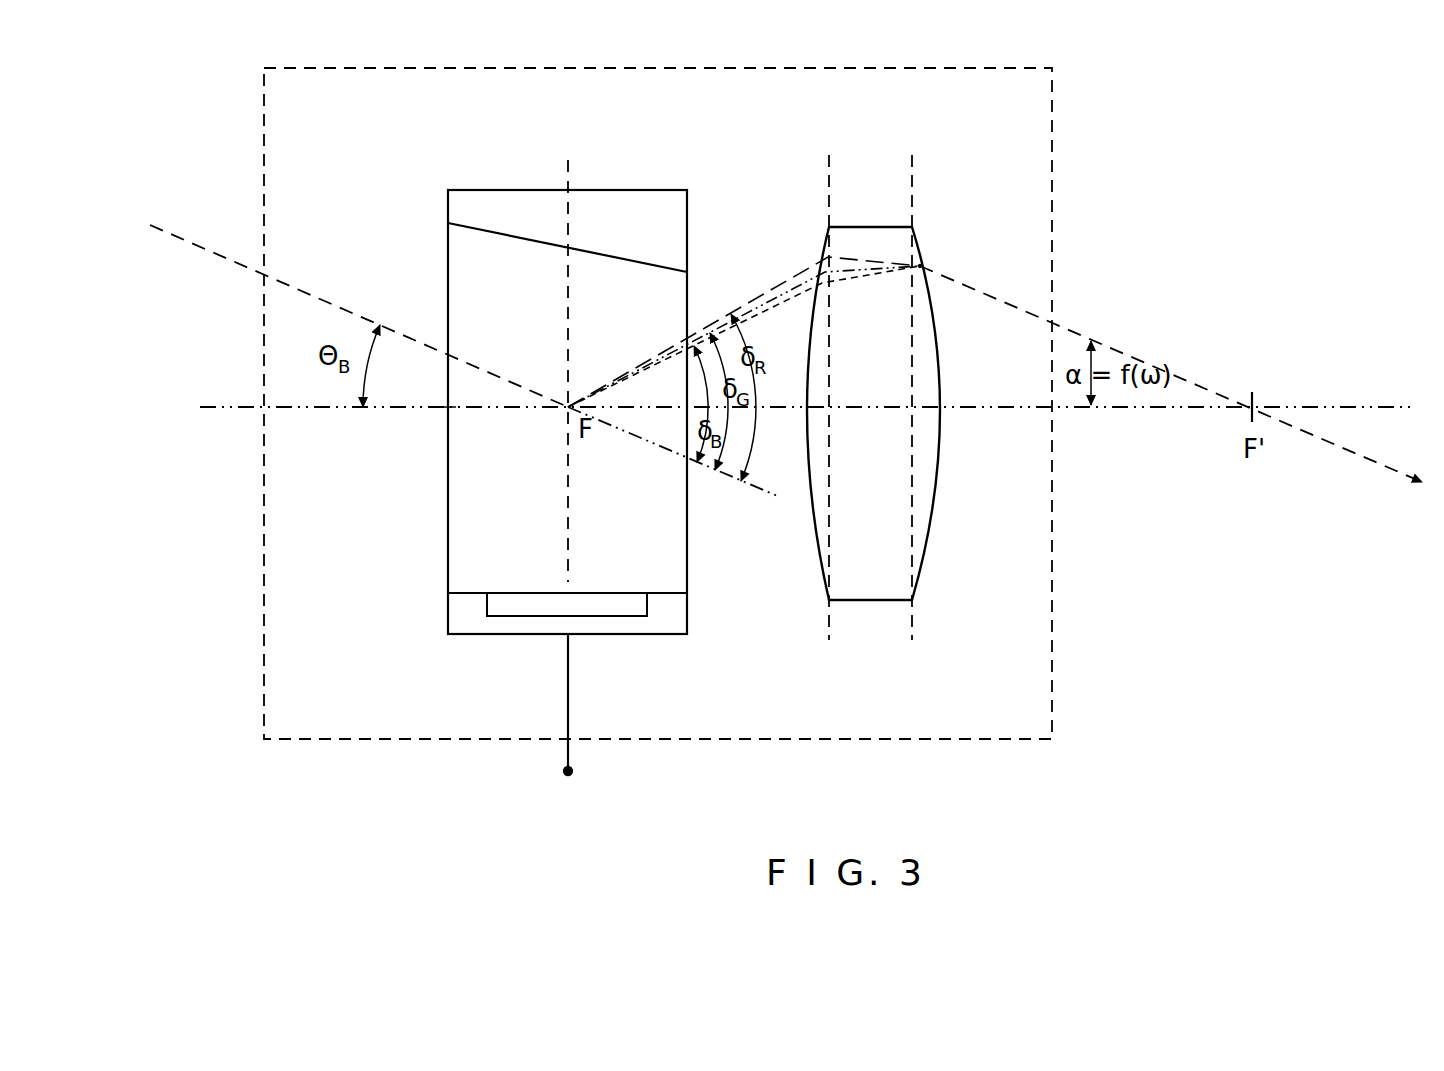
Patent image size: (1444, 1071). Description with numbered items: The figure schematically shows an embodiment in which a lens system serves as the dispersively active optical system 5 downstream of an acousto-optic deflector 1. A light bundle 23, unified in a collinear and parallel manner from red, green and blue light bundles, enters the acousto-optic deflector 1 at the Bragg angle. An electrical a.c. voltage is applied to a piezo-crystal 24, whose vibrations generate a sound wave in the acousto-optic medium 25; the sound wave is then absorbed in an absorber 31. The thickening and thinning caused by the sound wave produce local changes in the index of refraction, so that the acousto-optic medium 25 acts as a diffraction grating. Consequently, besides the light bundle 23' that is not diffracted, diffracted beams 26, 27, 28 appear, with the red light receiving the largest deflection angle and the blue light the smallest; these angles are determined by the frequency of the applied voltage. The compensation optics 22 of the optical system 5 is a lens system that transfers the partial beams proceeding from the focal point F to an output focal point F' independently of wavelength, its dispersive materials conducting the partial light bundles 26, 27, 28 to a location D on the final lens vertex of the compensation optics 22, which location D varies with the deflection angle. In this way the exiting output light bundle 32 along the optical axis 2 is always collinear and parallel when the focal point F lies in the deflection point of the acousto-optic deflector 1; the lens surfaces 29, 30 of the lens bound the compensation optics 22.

The acousto-optic deflector 1 is at (447, 408).
The optical axis 2 is at (1323, 405).
The dispersively active optical system 5 is at (900, 431).
The compensation optics 22 is at (868, 520).
The light bundle 23 is at (359, 316).
The light bundle that is not diffracted 23' is at (675, 496).
The piezo-crystal 24 is at (646, 616).
The acousto-optic medium 25 is at (455, 541).
The diffracted beam 26 is at (718, 310).
The diffracted beam 27 is at (748, 292).
The diffracted beam 28 is at (774, 280).
The lens entrance surface 29 is at (815, 545).
The lens exit surface 30 is at (940, 488).
The absorber 31 is at (470, 200).
The output light bundle 32 is at (1172, 376).
The location on final lens vertex D is at (924, 266).